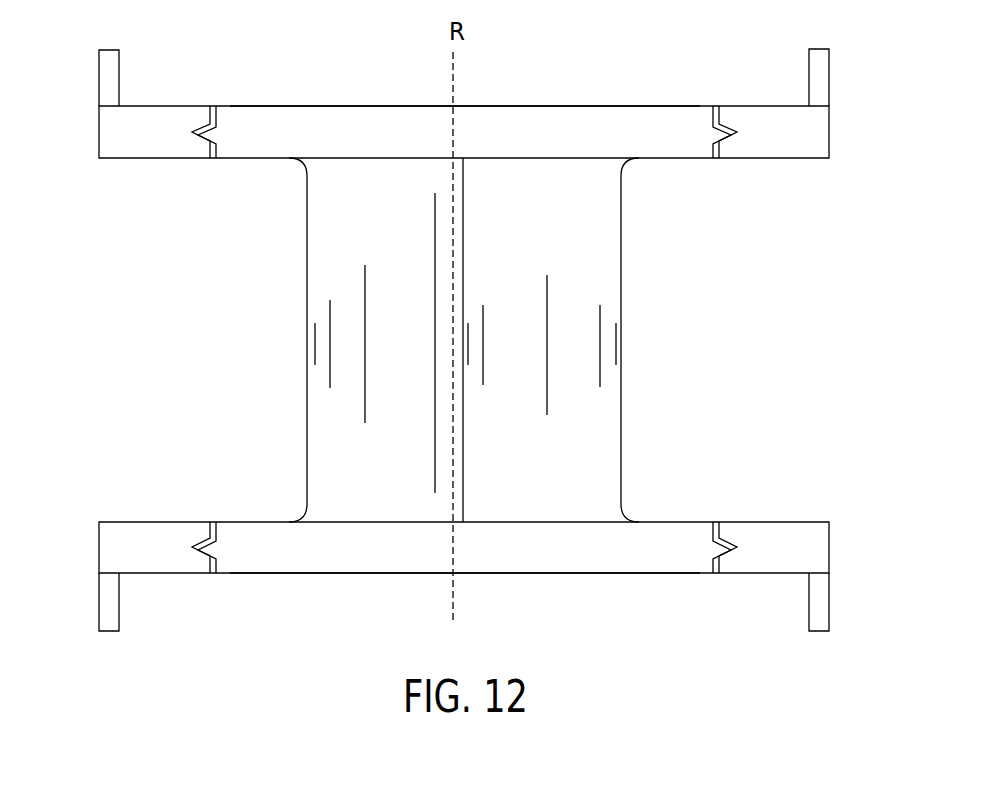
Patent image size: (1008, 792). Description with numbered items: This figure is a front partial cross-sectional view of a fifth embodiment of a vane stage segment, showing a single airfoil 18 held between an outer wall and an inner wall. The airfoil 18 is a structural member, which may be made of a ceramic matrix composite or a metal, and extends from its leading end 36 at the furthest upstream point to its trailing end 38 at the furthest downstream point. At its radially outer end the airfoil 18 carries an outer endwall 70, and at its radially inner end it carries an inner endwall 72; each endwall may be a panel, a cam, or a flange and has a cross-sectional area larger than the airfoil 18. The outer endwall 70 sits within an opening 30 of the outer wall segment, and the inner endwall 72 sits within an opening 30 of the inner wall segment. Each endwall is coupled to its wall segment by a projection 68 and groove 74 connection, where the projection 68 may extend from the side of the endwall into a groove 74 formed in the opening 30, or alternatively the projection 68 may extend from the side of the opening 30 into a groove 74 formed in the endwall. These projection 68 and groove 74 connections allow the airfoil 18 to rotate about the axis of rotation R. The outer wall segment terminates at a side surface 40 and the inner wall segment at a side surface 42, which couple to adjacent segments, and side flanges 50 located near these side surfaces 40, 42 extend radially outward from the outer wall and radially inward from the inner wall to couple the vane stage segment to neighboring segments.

The airfoil 18 is at (545, 244).
The opening 30 is at (213, 170).
The leading end 36 is at (547, 398).
The trailing end 38 is at (307, 327).
The side surface 40 is at (99, 128).
The side surface 42 is at (99, 545).
The side flange 50 is at (119, 75).
The projection 68 is at (218, 132).
The outer endwall 70 is at (372, 118).
The inner endwall 72 is at (355, 558).
The groove 74 is at (186, 146).